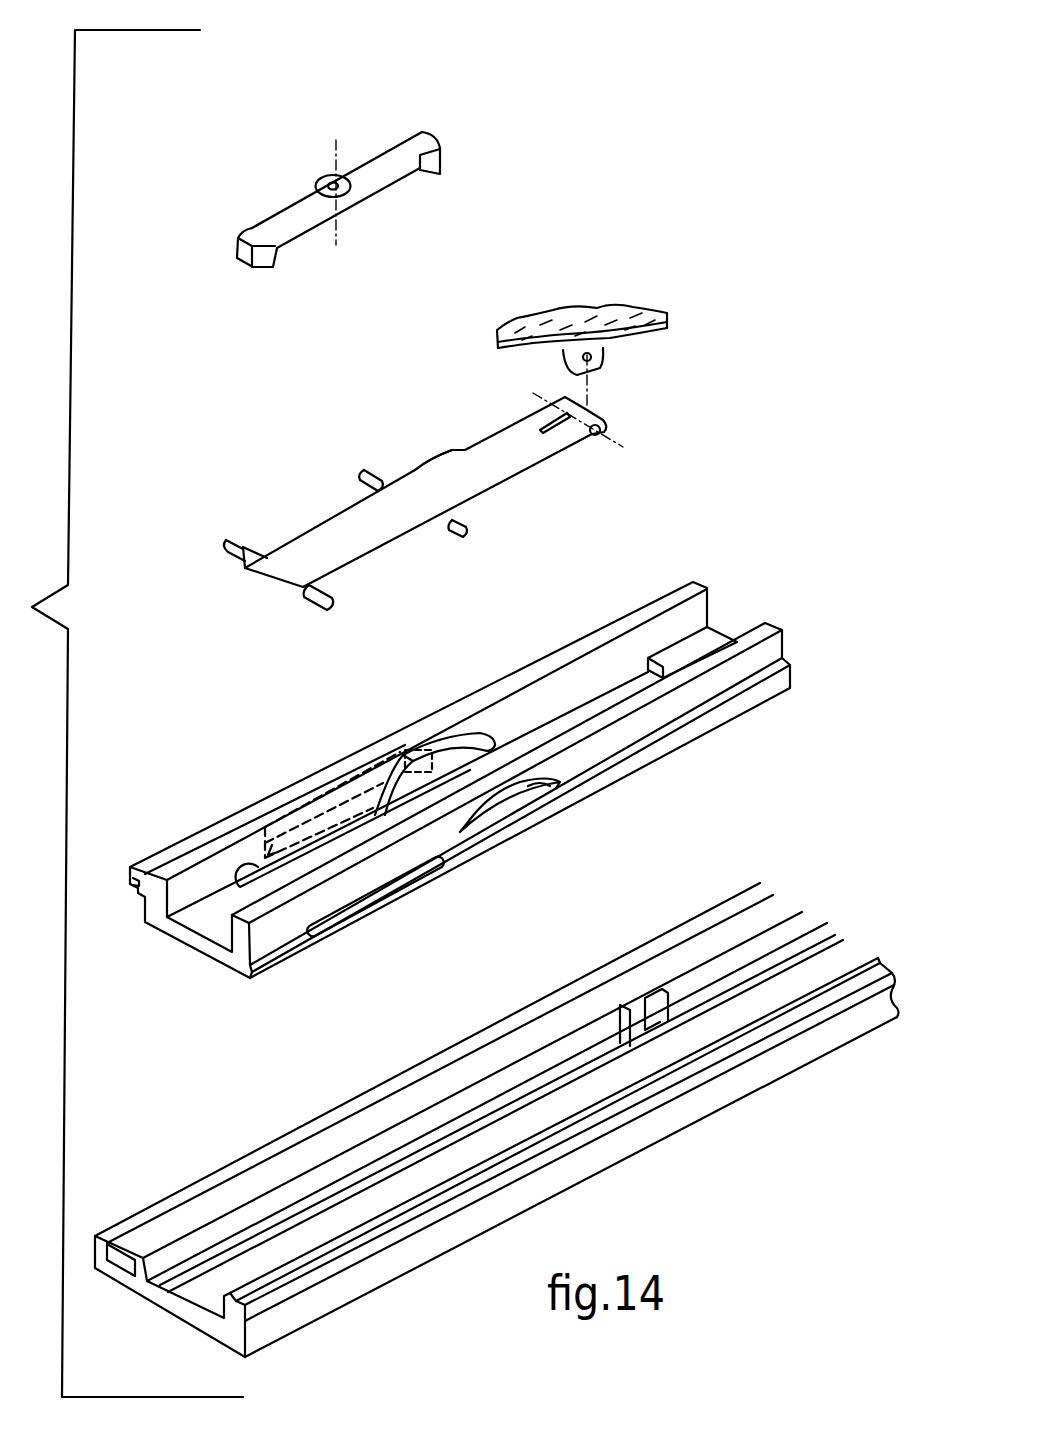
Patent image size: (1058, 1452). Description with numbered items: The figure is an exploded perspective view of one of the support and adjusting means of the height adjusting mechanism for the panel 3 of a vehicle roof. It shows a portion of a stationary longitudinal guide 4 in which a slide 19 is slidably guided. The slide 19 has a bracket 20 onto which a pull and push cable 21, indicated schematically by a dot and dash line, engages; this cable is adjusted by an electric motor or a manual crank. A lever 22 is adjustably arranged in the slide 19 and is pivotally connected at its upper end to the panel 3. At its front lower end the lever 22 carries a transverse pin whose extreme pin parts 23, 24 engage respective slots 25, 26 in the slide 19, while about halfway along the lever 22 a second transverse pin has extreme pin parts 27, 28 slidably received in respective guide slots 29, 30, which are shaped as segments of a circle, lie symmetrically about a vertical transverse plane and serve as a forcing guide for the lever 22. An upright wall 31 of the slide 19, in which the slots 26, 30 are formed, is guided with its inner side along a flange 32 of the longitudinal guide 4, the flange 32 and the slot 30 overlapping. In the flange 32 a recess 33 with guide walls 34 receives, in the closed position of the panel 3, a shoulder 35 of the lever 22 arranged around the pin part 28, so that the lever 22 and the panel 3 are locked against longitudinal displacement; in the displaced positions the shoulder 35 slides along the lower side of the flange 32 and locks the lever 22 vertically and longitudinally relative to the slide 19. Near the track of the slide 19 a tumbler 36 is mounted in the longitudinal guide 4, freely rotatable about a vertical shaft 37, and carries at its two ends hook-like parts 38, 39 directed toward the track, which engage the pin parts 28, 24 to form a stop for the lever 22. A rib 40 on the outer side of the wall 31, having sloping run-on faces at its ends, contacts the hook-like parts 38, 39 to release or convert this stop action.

The panel 3 is at (597, 325).
The longitudinal guide 4 is at (663, 1122).
The slide 19 is at (745, 707).
The bracket 20 is at (149, 868).
The pull and push cable 21 is at (132, 881).
The lever 22 is at (318, 540).
The pin part 23 is at (310, 604).
The pin part 24 is at (222, 546).
The slot 25 is at (400, 885).
The slot 26 is at (262, 875).
The pin part 27 is at (470, 528).
The pin part 28 is at (362, 470).
The guide slot 29 is at (523, 790).
The guide slot 30 is at (476, 735).
The upright wall 31 is at (652, 606).
The flange 32 is at (227, 1228).
The recess 33 is at (650, 1006).
The guide walls 34 is at (640, 1010).
The shoulder 35 is at (388, 477).
The tumbler 36 is at (371, 163).
The vertical shaft 37 is at (333, 152).
The hook-like part 38 is at (433, 140).
The hook-like part 39 is at (254, 238).
The rib 40 is at (326, 830).